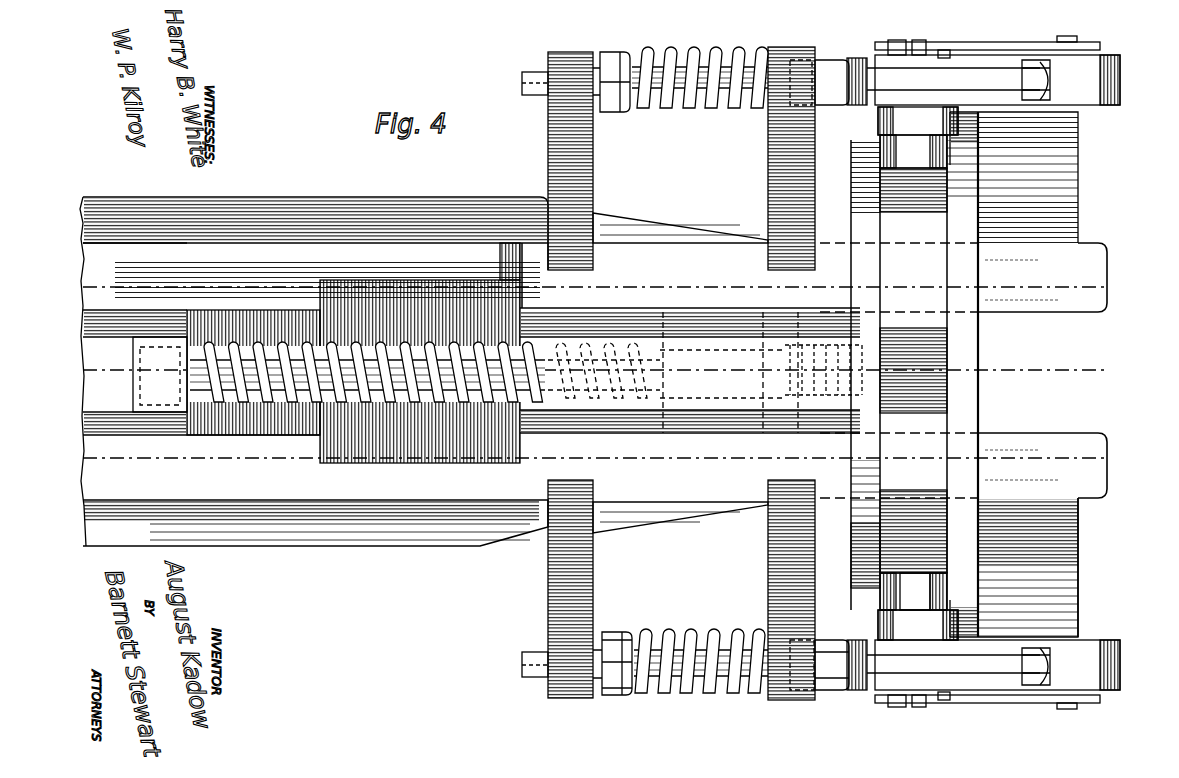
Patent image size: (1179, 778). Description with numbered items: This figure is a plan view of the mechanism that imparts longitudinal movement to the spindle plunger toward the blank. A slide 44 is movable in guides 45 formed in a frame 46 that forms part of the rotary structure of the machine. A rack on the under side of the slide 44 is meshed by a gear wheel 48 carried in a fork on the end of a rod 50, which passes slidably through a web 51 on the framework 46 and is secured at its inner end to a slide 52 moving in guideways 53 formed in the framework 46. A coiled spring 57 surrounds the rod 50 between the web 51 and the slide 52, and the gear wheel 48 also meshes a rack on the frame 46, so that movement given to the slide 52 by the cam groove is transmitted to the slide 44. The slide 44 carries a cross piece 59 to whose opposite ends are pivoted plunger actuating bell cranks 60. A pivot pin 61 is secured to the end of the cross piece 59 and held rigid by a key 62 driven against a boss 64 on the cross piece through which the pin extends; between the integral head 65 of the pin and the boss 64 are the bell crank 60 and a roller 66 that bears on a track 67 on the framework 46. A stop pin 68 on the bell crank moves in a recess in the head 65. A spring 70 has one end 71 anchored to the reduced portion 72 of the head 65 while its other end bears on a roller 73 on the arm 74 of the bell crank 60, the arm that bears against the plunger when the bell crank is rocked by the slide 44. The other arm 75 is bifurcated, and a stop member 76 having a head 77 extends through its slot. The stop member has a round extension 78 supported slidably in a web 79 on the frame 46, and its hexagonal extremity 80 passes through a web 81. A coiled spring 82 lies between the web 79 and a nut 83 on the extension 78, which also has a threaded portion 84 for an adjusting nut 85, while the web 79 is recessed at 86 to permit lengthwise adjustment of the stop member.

The slide 44 is at (655, 420).
The guides 45 is at (1090, 282).
The frame 46 is at (1096, 496).
The gear wheel 48 is at (698, 373).
The rod 50 is at (440, 340).
The web 51 is at (716, 415).
The slide 52 is at (157, 420).
The guideways 53 is at (240, 290).
The coiled spring 57 is at (440, 395).
The cross piece 59 is at (950, 338).
The bell crank 60 is at (1062, 93).
The pivot pin 61 is at (952, 585).
The key 62 is at (950, 565).
The boss 64 is at (885, 150).
The head 65 is at (873, 57).
The roller 66 is at (878, 125).
The track 67 is at (1078, 124).
The stop pin 68 is at (945, 50).
The spring 70 is at (1025, 34).
The spring end 71 is at (920, 40).
The reduced portion 72 is at (897, 40).
The roller 73 is at (1075, 40).
The arm 74 is at (1118, 86).
The arm 75 is at (947, 68).
The stop member 76 is at (1010, 86).
The head 77 is at (1042, 98).
The extension 78 is at (720, 60).
The web 79 is at (805, 40).
The extremity 80 is at (515, 690).
The web 81 is at (568, 55).
The coiled spring 82 is at (690, 42).
The nut 83 is at (620, 640).
The threaded portion 84 is at (840, 692).
The adjusting nut 85 is at (828, 640).
The recess 86 is at (800, 640).